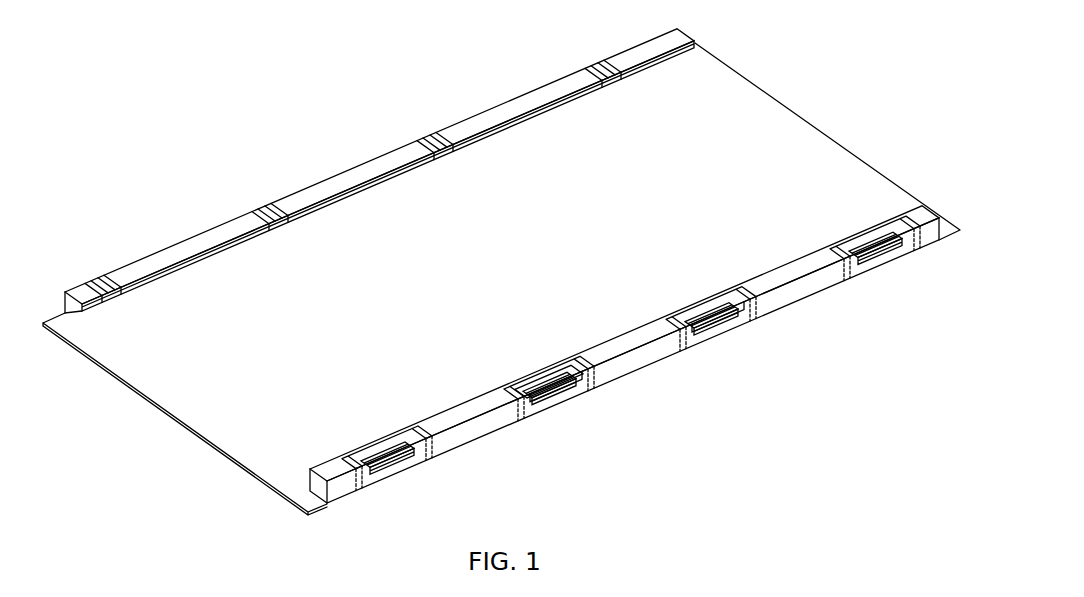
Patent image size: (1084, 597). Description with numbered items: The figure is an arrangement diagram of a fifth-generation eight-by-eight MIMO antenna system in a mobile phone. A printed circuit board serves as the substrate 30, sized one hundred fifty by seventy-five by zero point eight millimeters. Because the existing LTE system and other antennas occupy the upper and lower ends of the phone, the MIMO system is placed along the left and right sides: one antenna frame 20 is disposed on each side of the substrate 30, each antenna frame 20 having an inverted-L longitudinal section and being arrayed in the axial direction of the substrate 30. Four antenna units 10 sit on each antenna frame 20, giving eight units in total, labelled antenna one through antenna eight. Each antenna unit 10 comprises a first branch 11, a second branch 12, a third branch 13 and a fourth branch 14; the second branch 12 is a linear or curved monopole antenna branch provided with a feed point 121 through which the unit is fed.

The antenna unit 10 is at (860, 244).
The antenna frame 20 is at (763, 279).
The substrate 30 is at (768, 133).
The first branch 11 is at (535, 370).
The second branch 12 is at (565, 388).
The feed point 121 is at (722, 313).
The third branch 13 is at (347, 452).
The fourth branch 14 is at (405, 434).